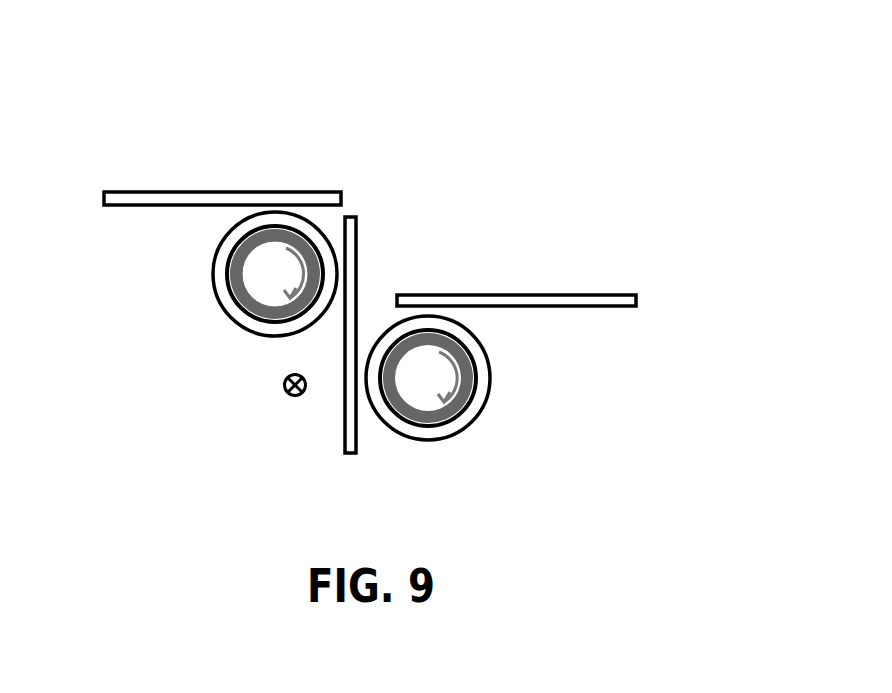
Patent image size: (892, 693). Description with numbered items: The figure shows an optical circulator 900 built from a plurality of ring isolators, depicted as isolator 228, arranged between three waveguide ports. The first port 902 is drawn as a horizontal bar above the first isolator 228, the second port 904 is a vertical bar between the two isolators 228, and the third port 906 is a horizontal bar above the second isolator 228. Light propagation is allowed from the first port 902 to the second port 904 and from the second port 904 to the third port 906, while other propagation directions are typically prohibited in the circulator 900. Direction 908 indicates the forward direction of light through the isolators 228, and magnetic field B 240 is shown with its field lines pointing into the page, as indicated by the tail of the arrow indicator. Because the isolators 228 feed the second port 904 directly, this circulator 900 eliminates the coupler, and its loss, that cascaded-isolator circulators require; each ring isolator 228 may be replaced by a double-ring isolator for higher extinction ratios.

The circulator 900 is at (402, 110).
The port 1 902 is at (219, 177).
The port 2 904 is at (371, 356).
The port 3 906 is at (531, 277).
The isolator 228 is at (252, 283).
The direction 908 is at (297, 273).
The magnetic field B 240 is at (255, 400).